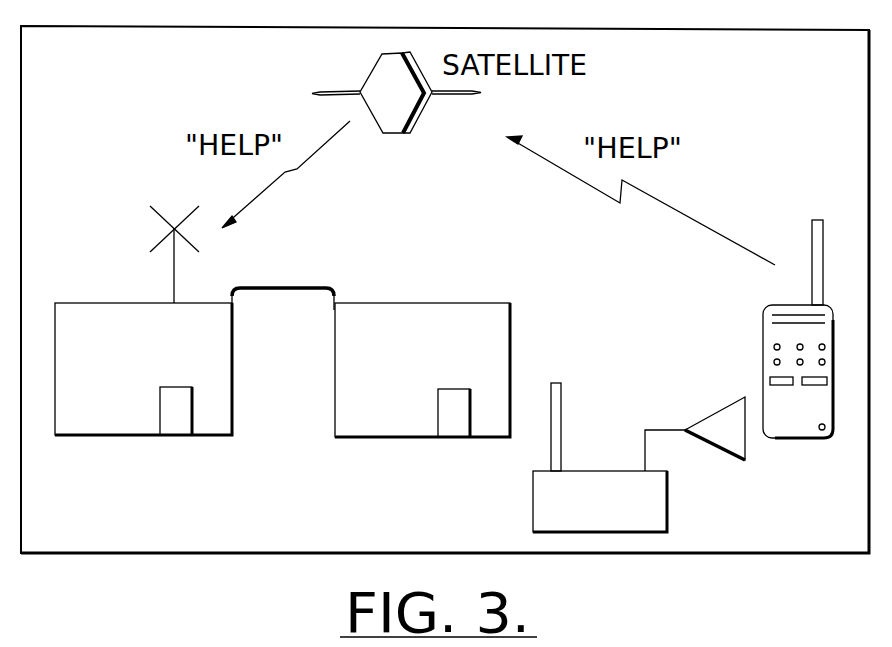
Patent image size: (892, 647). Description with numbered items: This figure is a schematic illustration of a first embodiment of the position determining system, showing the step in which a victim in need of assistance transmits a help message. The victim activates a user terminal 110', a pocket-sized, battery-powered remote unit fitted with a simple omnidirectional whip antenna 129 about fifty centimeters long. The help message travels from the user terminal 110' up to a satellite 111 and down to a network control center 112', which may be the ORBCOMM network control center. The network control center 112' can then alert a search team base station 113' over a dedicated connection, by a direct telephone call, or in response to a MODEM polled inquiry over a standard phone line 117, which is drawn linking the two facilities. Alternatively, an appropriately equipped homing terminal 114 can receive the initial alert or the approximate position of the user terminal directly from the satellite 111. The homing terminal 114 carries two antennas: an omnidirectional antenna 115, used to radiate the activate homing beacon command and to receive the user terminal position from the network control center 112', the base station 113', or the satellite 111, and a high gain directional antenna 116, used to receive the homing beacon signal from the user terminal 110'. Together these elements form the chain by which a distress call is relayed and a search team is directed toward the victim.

The satellite 111 is at (415, 115).
The network control center 112' is at (140, 368).
The search team base station 113' is at (422, 389).
The standard phone line 117 is at (279, 285).
The homing terminal 114 is at (629, 513).
The omnidirectional antenna 115 is at (560, 405).
The high gain directional antenna 116 is at (683, 428).
The user terminal 110' is at (774, 406).
The omnidirectional whip antenna 129 is at (812, 237).